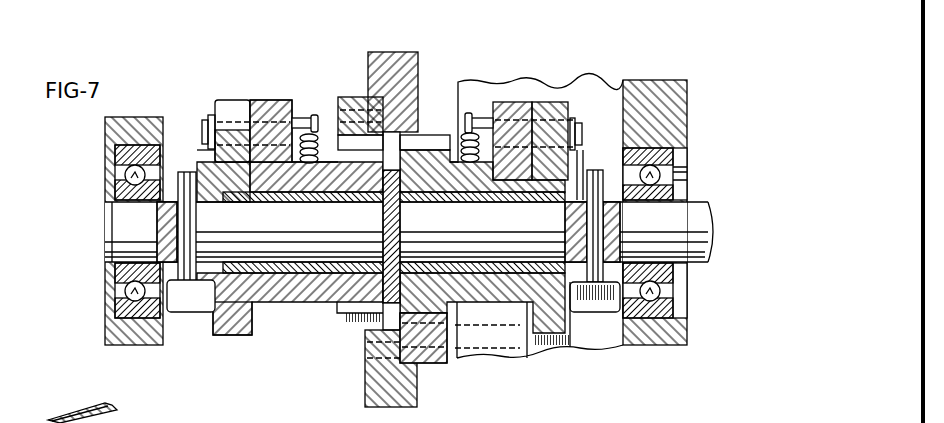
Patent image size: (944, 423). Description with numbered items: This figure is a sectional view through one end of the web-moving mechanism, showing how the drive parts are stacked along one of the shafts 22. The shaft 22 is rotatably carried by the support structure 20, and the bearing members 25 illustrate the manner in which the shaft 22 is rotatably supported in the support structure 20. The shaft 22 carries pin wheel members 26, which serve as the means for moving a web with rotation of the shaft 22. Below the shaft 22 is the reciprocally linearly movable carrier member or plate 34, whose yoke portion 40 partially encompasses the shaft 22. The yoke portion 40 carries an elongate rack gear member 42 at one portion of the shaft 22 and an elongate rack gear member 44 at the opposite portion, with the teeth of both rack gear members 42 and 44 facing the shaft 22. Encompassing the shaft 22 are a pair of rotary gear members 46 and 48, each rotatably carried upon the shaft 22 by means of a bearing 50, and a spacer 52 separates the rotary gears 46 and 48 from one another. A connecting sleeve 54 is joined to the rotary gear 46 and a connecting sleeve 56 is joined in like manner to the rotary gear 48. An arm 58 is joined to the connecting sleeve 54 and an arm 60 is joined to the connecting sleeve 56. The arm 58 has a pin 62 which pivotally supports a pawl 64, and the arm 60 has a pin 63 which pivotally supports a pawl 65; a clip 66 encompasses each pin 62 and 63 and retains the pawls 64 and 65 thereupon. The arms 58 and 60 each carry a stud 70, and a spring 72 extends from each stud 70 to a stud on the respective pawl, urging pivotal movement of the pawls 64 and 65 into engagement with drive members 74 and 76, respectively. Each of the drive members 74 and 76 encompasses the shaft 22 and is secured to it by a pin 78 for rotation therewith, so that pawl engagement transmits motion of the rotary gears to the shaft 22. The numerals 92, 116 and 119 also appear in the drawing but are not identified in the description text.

The support structure 20 is at (115, 322).
The shaft 22 is at (707, 220).
The bearing member 25 is at (120, 273).
The pin wheel member 26 is at (266, 413).
The carrier member or plate 34 is at (356, 392).
The yoke portion 40 is at (398, 52).
The rack gear member 42 is at (352, 97).
The rack gear member 44 is at (447, 356).
The rotary gear member 46 is at (346, 320).
The rotary gear member 48 is at (455, 312).
The bearing 50 is at (270, 198).
The spacer 52 is at (393, 186).
The connecting sleeve 54 is at (358, 184).
The connecting sleeve 56 is at (468, 186).
The arm 58 is at (270, 100).
The arm 60 is at (510, 102).
The pin 62 is at (203, 135).
The pin 63 is at (583, 137).
The pawl 64 is at (235, 100).
The pawl 65 is at (548, 102).
The clip 66 is at (207, 120).
The stud 70 is at (303, 118).
The spring 72 is at (310, 184).
The drive member 74 is at (250, 322).
The drive member 76 is at (567, 318).
The pin 78 is at (190, 283).
The arm 92 is at (200, 422).
The bar 116 is at (45, 420).
The link 119 is at (135, 422).